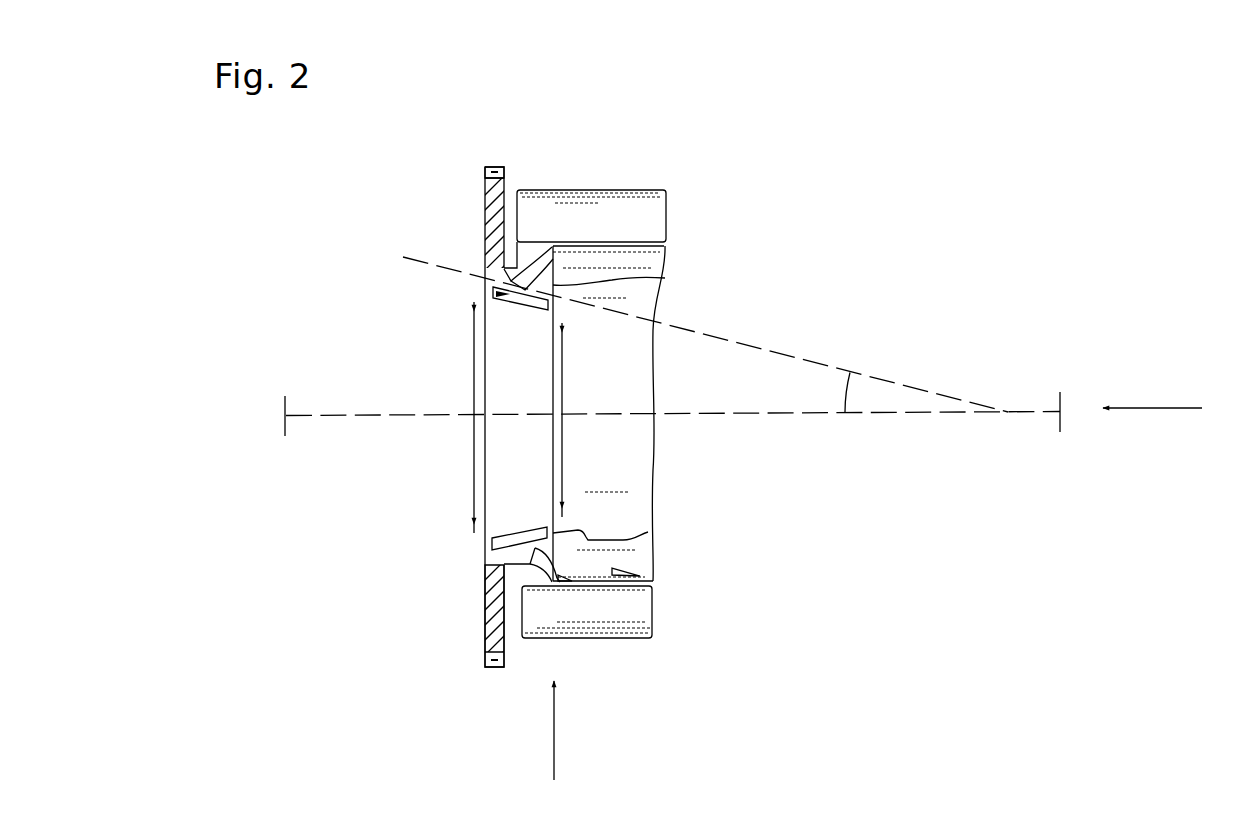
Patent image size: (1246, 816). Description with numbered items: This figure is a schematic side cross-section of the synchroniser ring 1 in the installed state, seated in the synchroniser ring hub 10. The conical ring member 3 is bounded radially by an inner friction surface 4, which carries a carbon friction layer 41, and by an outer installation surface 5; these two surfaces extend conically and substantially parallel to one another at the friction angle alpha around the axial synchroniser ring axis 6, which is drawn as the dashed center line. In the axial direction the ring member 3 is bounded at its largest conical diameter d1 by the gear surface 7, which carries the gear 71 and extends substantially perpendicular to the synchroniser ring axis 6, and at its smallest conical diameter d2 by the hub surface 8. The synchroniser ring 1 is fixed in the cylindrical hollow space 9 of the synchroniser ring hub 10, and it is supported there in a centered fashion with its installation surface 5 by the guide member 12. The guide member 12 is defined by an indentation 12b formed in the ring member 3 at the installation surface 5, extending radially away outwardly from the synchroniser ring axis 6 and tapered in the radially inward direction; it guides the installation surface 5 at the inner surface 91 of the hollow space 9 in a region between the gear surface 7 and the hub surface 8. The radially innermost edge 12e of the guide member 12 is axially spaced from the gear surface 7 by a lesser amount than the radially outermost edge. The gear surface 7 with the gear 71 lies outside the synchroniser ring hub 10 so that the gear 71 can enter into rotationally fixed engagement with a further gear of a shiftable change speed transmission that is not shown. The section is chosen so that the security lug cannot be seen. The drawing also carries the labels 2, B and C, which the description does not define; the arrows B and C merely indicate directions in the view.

The synchroniser ring 1 is at (472, 396).
The housing 2 is at (619, 414).
The conical ring member 3 is at (535, 547).
The inner friction surface 4 is at (505, 545).
The outer installation surface 5 is at (518, 263).
The synchroniser ring axis 6 is at (1060, 412).
The gear surface 7 is at (482, 620).
The hub surface 8 is at (573, 572).
The cylindrical hollow space 9 is at (631, 561).
The synchroniser ring hub 10 is at (645, 225).
The guide member 12 is at (677, 369).
The indentation 12b is at (665, 278).
The radially innermost edge 12e is at (648, 532).
The carbon friction layer 41 is at (500, 297).
The gear 71 is at (493, 174).
The inner surface 91 is at (612, 568).
The largest conical diameter d1 is at (474, 342).
The smallest conical diameter d2 is at (562, 375).
The friction angle alpha is at (892, 397).
The direction B is at (1155, 426).
The direction C is at (565, 732).